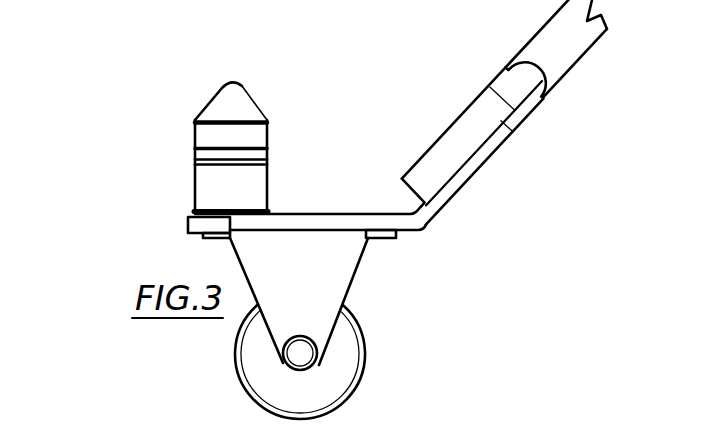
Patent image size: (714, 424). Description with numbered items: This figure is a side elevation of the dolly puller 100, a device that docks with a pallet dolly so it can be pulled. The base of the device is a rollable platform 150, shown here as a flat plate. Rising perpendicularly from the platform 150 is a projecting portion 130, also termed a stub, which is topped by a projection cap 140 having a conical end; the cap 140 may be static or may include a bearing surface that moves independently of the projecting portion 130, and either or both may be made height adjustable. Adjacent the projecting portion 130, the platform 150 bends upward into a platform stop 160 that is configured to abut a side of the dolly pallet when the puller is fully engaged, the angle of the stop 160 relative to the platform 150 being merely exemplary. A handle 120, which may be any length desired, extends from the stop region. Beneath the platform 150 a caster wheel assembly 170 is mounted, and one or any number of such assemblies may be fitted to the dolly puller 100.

The dolly puller 100 is at (106, 228).
The handle 120 is at (562, 65).
The projecting portion 130 is at (210, 187).
The projection cap 140 is at (225, 112).
The rollable platform 150 is at (347, 228).
The platform stop 160 is at (478, 163).
The caster wheel assembly 170 is at (330, 358).